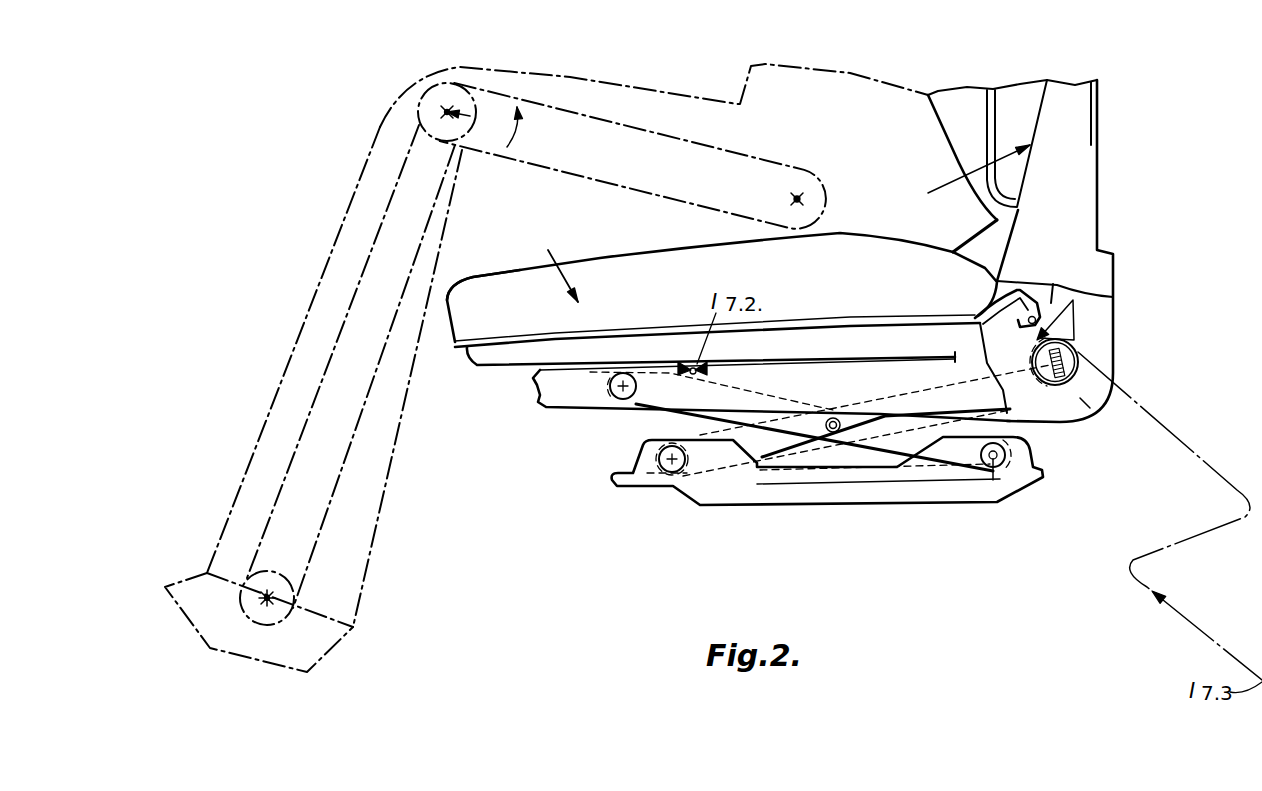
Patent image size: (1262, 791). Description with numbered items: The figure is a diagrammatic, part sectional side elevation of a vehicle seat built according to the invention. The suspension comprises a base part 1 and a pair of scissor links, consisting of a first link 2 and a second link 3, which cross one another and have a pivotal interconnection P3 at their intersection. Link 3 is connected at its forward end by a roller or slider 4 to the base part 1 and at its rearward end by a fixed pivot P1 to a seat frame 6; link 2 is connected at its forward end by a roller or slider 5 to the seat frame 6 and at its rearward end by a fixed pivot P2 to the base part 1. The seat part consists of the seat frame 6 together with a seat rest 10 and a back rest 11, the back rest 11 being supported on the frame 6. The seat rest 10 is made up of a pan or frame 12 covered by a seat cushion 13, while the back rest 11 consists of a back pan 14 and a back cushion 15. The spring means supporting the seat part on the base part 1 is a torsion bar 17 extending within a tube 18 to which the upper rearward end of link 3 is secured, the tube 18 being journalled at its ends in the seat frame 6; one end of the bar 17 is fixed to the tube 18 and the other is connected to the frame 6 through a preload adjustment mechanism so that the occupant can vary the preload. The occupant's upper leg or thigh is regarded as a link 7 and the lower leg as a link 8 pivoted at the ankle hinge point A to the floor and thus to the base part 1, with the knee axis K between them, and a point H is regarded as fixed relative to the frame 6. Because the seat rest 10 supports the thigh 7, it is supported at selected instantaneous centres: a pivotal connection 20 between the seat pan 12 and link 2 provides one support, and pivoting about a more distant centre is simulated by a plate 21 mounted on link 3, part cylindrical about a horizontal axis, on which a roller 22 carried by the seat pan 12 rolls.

The base part 1 is at (953, 508).
The first link 2 is at (868, 453).
The second link 3 is at (762, 443).
The roller or slider 4 is at (668, 478).
The roller or slider 5 is at (610, 402).
The seat frame 6 is at (1077, 188).
The link (upper leg or thigh) 7 is at (651, 148).
The link (lower leg) 8 is at (350, 340).
The seat rest 10 is at (722, 287).
The back rest 11 is at (966, 175).
The pan or frame (seat pan) 12 is at (478, 363).
The seat cushion 13 is at (470, 278).
The back pan 14 is at (993, 104).
The back cushion 15 is at (957, 150).
The torsion bar 17 is at (1030, 364).
The tube 18 is at (1083, 342).
The pivotal connection 20 is at (688, 365).
The plate 21 is at (1055, 284).
The roller 22 is at (1032, 312).
The ankle hinge point A is at (272, 595).
The point H is at (793, 197).
The knee axis K is at (482, 126).
The fixed pivot P1 is at (1096, 418).
The fixed pivot P2 is at (995, 482).
The pivotal interconnection P3 is at (834, 418).